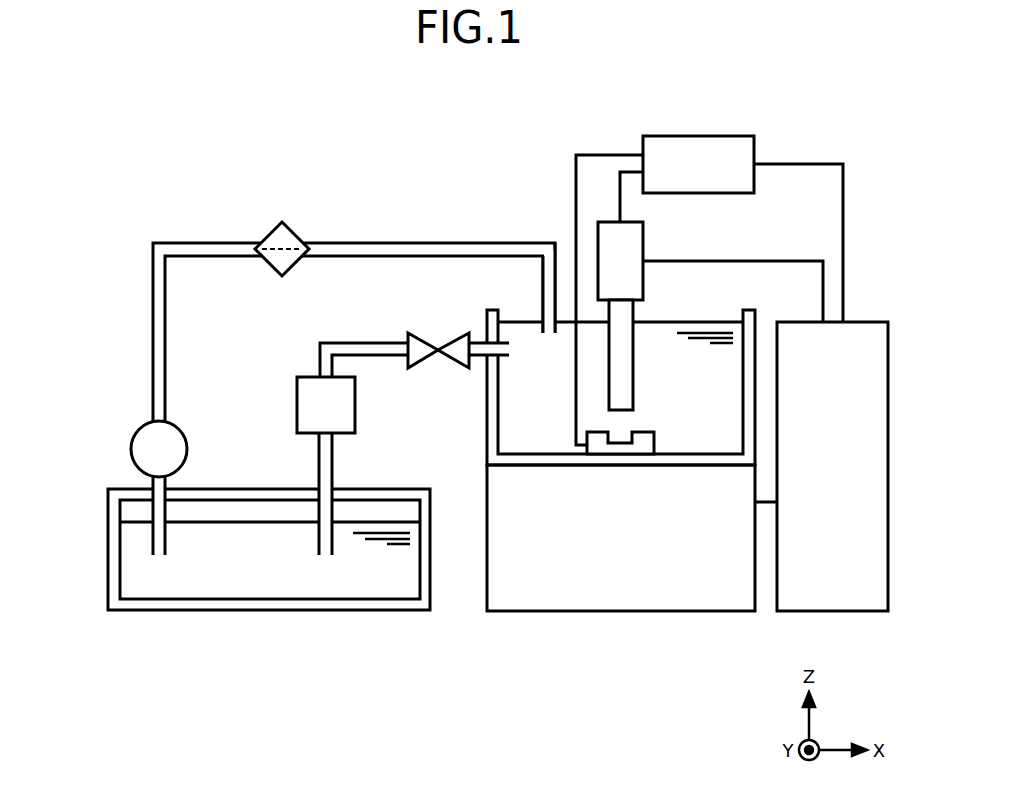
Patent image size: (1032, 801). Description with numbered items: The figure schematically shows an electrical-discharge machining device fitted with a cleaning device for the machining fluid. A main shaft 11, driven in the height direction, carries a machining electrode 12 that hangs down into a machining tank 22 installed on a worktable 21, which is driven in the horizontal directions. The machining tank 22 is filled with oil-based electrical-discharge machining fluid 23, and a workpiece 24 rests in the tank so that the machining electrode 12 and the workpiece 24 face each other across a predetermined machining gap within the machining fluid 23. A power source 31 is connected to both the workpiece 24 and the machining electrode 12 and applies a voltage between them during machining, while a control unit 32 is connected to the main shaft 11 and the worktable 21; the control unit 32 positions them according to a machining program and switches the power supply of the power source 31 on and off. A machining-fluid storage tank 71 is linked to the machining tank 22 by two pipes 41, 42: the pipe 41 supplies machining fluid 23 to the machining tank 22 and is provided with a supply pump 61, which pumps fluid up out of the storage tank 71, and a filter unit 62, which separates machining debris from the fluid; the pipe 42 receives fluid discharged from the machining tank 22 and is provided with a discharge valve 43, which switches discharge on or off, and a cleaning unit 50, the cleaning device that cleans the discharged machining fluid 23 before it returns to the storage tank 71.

The main shaft 11 is at (645, 233).
The machining electrode 12 is at (634, 386).
The worktable 21 is at (587, 612).
The machining tank 22 is at (487, 432).
The electrical-discharge machining fluid 23 is at (130, 546).
The workpiece 24 is at (655, 441).
The power source 31 is at (700, 137).
The control unit 32 is at (858, 322).
The pipe 41 is at (410, 243).
The pipe 42 is at (358, 343).
The discharge valve 43 is at (424, 336).
The cleaning unit 50 is at (297, 401).
The supply pump 61 is at (131, 447).
The filter unit 62 is at (267, 233).
The machining-fluid storage tank 71 is at (108, 583).